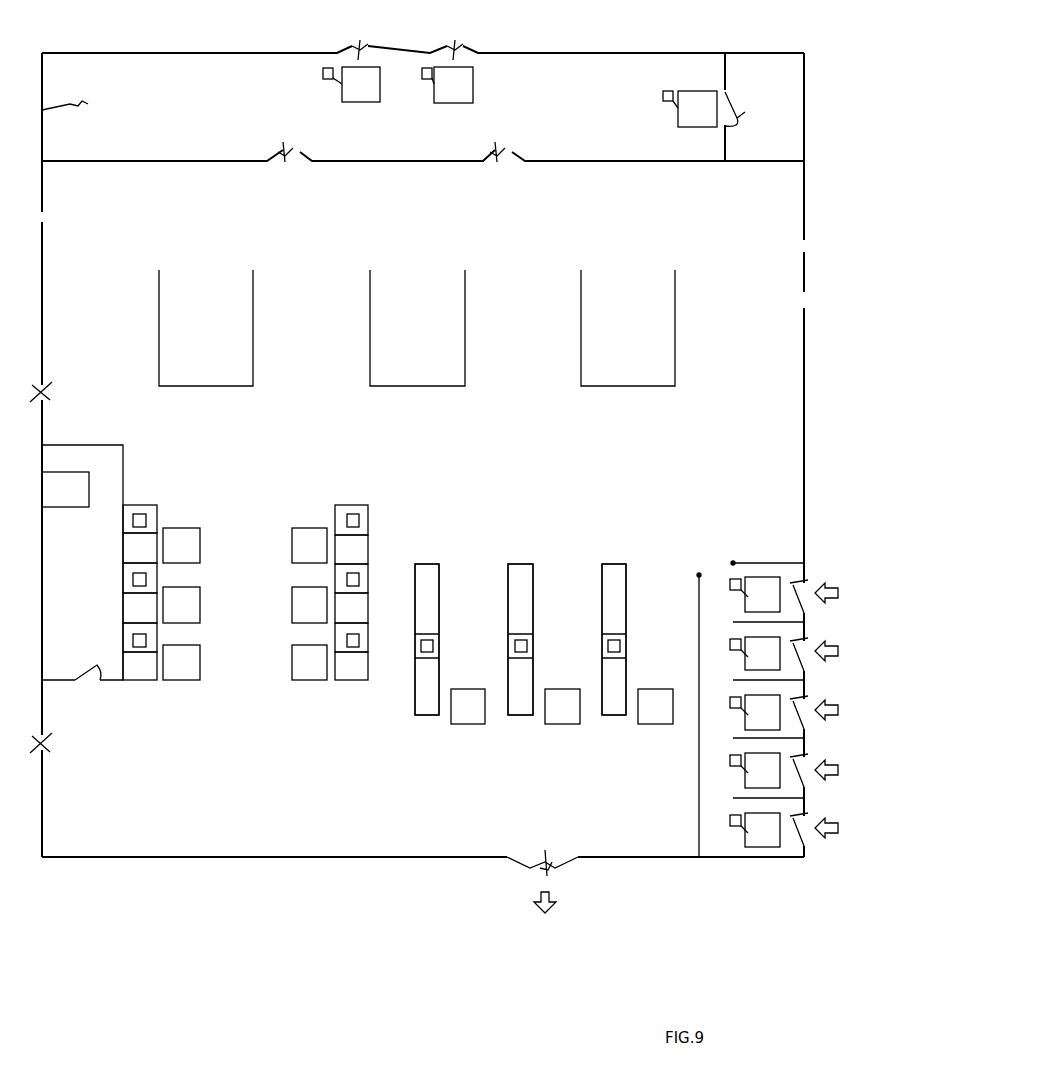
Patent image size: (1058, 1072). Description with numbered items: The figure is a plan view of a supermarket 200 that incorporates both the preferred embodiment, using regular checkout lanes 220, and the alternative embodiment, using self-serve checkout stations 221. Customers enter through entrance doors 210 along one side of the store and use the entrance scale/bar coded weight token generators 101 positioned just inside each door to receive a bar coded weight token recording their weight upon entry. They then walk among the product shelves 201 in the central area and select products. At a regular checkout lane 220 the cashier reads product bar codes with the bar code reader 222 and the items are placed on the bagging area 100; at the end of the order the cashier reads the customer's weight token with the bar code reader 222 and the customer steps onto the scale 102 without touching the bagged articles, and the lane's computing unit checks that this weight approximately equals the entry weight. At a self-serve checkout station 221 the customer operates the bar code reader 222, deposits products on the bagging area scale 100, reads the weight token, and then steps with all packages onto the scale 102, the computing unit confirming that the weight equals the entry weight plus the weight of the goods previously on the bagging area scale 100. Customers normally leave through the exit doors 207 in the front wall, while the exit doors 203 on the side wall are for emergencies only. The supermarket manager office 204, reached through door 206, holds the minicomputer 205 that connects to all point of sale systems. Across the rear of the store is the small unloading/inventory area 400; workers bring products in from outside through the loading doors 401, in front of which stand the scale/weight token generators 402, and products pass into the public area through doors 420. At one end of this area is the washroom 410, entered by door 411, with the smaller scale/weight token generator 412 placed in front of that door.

The bagging area 100 is at (132, 543).
The entrance scale/bar coded weight token generator 101 is at (752, 597).
The scale 102 is at (192, 544).
The supermarket 200 is at (827, 378).
The product shelves 201 is at (248, 325).
The exit doors 203 is at (44, 400).
The supermarket manager office 204 is at (118, 457).
The minicomputer 205 is at (62, 472).
The door 206 is at (75, 672).
The exit doors 207 is at (526, 862).
The entrance doors 210 is at (808, 580).
The regular checkout lanes 220 is at (435, 572).
The self-serve checkout stations 221 is at (132, 510).
The bar code reader 222 is at (146, 520).
The unloading/inventory area 400 is at (78, 105).
The loading doors 401 is at (368, 46).
The scale/weight token generators 402 is at (365, 102).
The washroom 410 is at (790, 100).
The door 411 is at (737, 110).
The scale/weight token generator 412 is at (678, 118).
The doors 420 is at (277, 163).